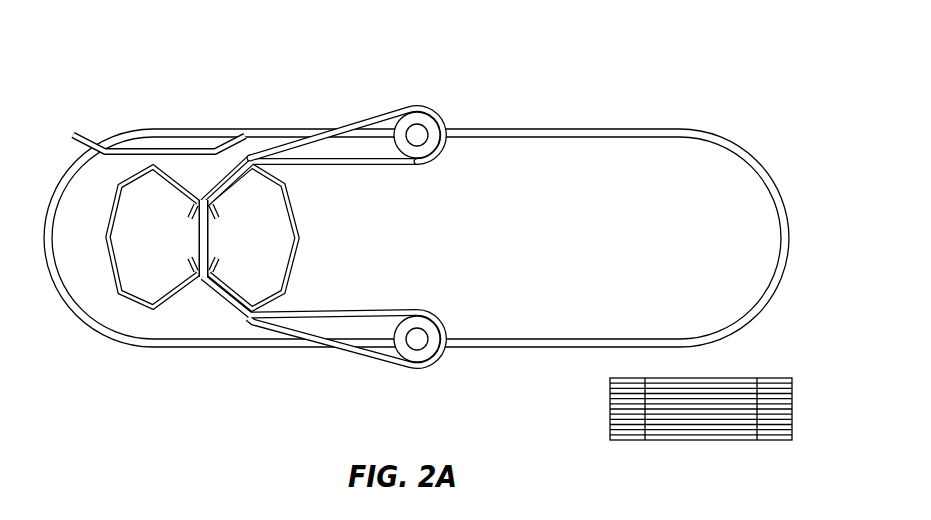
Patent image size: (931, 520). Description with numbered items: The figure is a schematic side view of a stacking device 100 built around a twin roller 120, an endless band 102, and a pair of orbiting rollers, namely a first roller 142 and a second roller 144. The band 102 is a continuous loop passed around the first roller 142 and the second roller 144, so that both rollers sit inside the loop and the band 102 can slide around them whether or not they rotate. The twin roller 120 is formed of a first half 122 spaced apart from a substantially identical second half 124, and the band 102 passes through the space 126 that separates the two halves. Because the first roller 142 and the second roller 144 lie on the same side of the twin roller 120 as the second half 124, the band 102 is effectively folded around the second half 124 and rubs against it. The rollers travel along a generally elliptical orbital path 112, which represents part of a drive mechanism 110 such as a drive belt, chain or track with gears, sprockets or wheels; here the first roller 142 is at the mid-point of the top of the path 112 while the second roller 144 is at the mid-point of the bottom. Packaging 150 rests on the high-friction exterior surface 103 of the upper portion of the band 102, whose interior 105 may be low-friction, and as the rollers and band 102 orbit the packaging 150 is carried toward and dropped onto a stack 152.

The stacking device 100 is at (530, 86).
The band 102 is at (365, 108).
The exterior surface 103 is at (275, 148).
The interior 105 is at (352, 157).
The drive mechanism 110 is at (742, 136).
The orbital path 112 is at (573, 129).
The twin roller 120 is at (196, 295).
The first half 122 is at (128, 297).
The second half 124 is at (270, 308).
The space 126 is at (190, 237).
The first roller 142 is at (417, 135).
The second roller 144 is at (418, 343).
The packaging 150 is at (158, 150).
The stack 152 is at (737, 385).